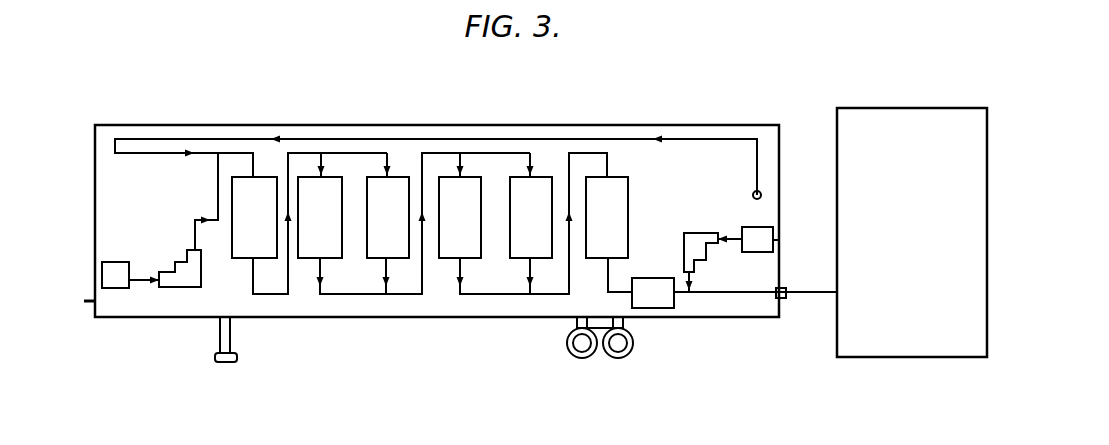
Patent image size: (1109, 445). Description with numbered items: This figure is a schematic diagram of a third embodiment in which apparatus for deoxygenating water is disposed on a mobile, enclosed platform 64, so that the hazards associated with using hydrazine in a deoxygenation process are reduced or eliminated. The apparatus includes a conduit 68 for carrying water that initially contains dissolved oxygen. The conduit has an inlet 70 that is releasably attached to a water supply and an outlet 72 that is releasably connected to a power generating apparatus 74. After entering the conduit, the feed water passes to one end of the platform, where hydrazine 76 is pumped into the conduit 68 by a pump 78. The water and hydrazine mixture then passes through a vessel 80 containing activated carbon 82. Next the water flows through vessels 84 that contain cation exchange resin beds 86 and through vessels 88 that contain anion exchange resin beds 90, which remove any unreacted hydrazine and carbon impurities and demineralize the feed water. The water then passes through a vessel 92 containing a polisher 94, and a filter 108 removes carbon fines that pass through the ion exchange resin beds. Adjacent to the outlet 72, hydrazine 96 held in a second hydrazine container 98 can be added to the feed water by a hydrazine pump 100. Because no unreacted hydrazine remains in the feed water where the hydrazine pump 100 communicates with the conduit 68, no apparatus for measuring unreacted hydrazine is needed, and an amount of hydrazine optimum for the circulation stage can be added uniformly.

The mobile enclosed platform 64 is at (211, 125).
The conduit 68 is at (431, 139).
The inlet 70 is at (761, 196).
The outlet 72 is at (772, 300).
The power generating apparatus 74 is at (872, 358).
The hydrazine 76 is at (106, 285).
The pump 78 is at (175, 268).
The vessel 80 is at (232, 252).
The activated carbon 82 is at (243, 227).
The vessels 84 is at (377, 258).
The cation exchange resin beds 86 is at (309, 227).
The vessels 88 is at (471, 258).
The anion exchange resin beds 90 is at (449, 227).
The vessel 92 is at (597, 258).
The polisher 94 is at (596, 227).
The hydrazine 96 is at (748, 249).
The second hydrazine container 98 is at (779, 240).
The hydrazine pump 100 is at (704, 233).
The filter 108 is at (637, 303).